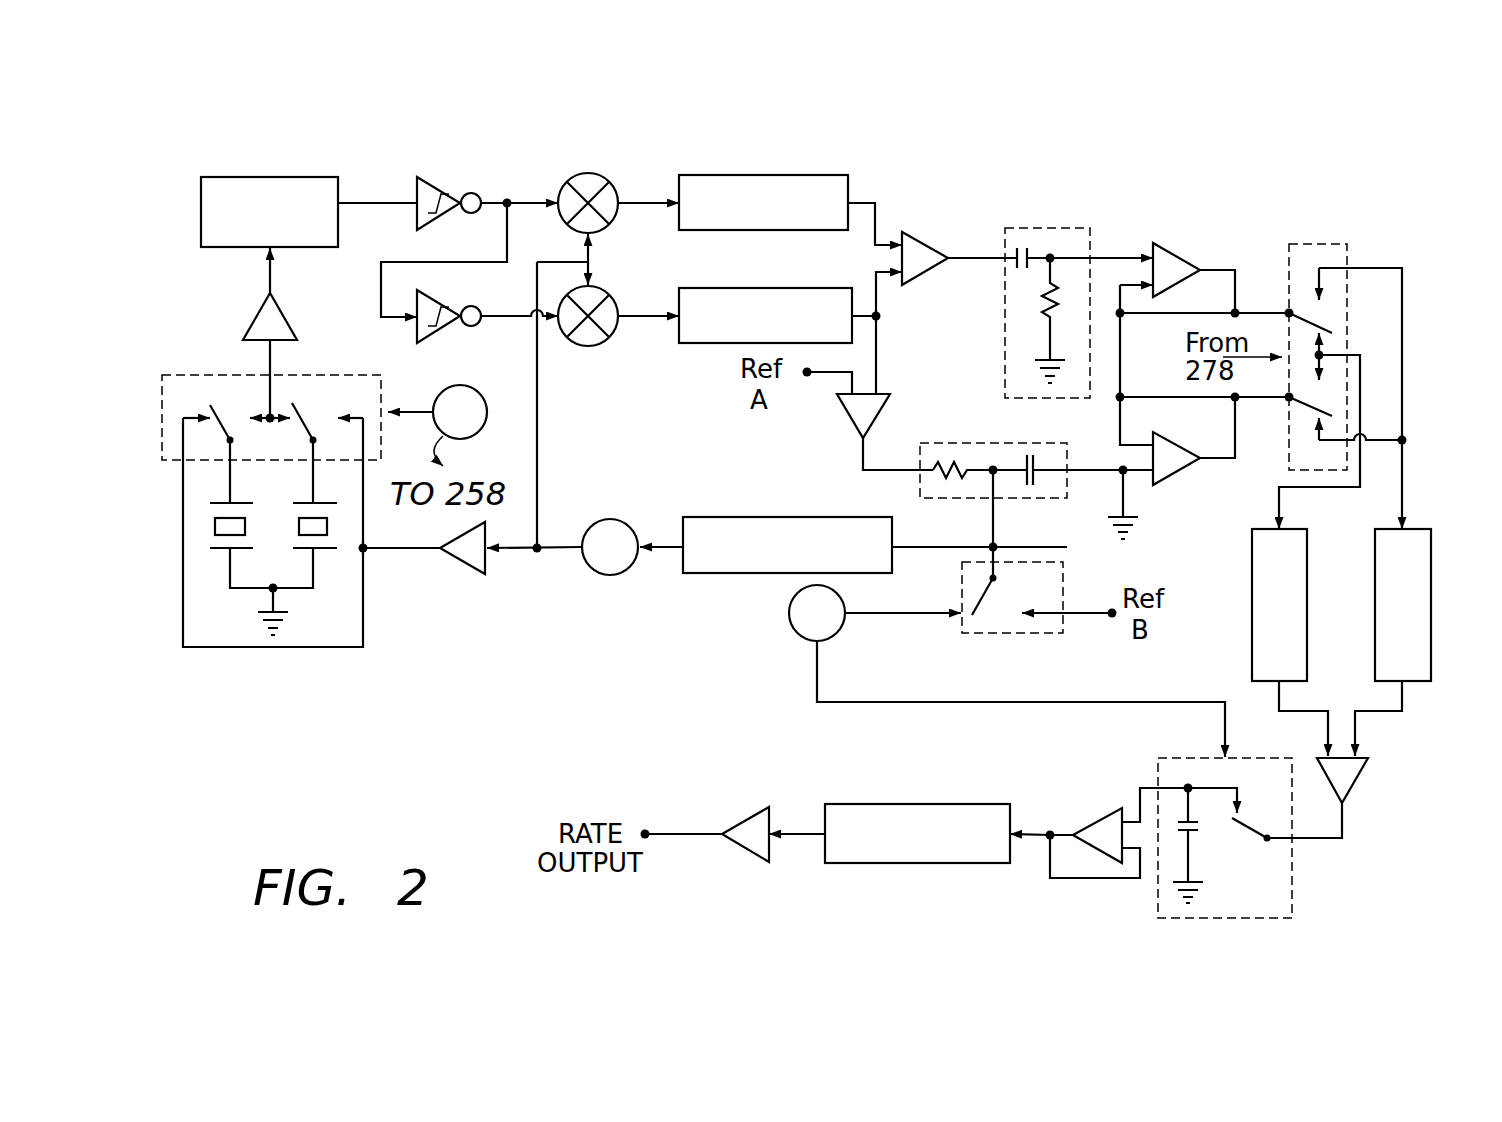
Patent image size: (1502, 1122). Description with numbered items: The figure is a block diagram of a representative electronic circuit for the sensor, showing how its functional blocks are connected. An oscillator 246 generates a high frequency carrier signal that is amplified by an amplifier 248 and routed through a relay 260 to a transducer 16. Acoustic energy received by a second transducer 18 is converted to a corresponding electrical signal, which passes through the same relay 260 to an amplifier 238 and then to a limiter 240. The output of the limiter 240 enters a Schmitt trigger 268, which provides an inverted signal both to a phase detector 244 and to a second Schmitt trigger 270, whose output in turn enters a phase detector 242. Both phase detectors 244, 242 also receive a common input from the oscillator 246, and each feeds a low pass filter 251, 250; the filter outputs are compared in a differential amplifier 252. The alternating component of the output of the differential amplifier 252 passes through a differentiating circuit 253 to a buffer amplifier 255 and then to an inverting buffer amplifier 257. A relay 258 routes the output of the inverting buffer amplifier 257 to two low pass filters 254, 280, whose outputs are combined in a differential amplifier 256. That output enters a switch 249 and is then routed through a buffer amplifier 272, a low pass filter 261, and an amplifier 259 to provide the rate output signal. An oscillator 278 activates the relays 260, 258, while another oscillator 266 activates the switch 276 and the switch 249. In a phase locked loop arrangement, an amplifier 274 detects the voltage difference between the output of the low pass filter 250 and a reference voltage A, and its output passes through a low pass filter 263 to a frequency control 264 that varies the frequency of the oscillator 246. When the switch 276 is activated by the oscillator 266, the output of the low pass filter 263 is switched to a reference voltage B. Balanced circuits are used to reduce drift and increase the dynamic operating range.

The transducer 16 is at (200, 608).
The transducer 18 is at (363, 608).
The amplifier 238 is at (223, 294).
The limiter 240 is at (242, 163).
The phase detector 242 is at (601, 369).
The phase detector 244 is at (624, 226).
The oscillator 246 is at (582, 582).
The amplifier 248 is at (442, 583).
The switch 249 is at (1280, 844).
The low pass filter 250 is at (725, 350).
The low pass filter 251 is at (768, 165).
The differential amplifier 252 is at (945, 286).
The differentiating circuit 253 is at (1023, 281).
The low pass filter 254 is at (1224, 608).
The buffer amplifier 255 is at (1217, 236).
The differential amplifier 256 is at (1390, 809).
The inverting buffer amplifier 257 is at (1201, 481).
The relay 258 is at (1360, 324).
The amplifier 259 is at (701, 810).
The relay 260 is at (275, 396).
The low pass filter 261 is at (917, 803).
The low pass filter 263 is at (993, 447).
The frequency control 264 is at (765, 581).
The oscillator 266 is at (770, 635).
The Schmitt trigger 268 is at (472, 170).
The Schmitt trigger 270 is at (470, 331).
The buffer amplifier 272 is at (1065, 802).
The amplifier 274 is at (809, 437).
The switch 276 is at (1005, 625).
The oscillator 278 is at (542, 440).
The low pass filter 280 is at (1434, 653).